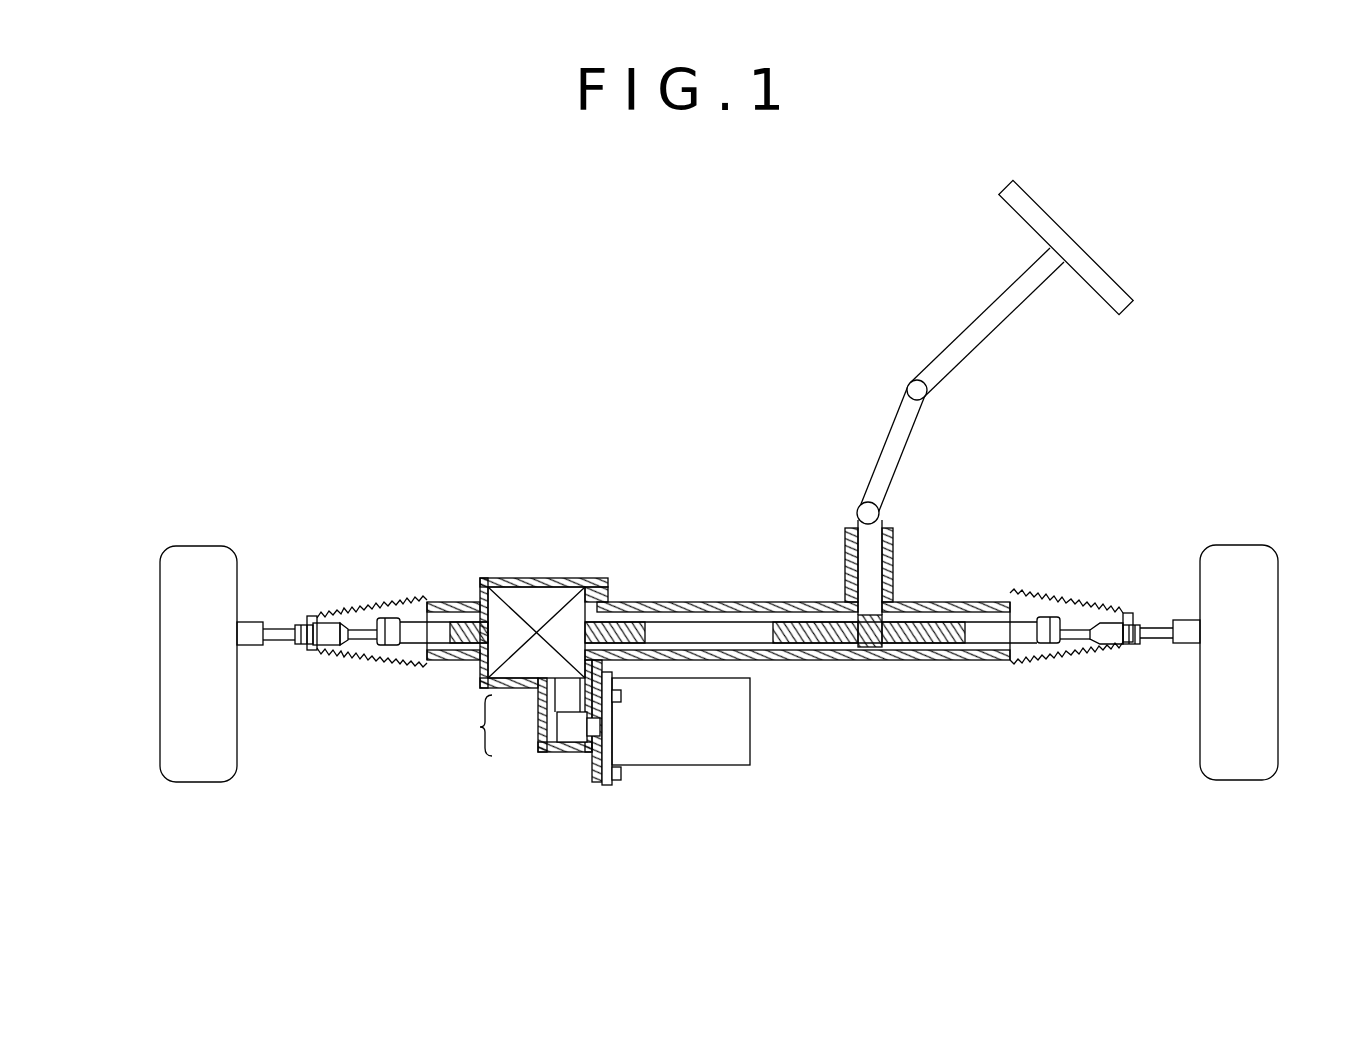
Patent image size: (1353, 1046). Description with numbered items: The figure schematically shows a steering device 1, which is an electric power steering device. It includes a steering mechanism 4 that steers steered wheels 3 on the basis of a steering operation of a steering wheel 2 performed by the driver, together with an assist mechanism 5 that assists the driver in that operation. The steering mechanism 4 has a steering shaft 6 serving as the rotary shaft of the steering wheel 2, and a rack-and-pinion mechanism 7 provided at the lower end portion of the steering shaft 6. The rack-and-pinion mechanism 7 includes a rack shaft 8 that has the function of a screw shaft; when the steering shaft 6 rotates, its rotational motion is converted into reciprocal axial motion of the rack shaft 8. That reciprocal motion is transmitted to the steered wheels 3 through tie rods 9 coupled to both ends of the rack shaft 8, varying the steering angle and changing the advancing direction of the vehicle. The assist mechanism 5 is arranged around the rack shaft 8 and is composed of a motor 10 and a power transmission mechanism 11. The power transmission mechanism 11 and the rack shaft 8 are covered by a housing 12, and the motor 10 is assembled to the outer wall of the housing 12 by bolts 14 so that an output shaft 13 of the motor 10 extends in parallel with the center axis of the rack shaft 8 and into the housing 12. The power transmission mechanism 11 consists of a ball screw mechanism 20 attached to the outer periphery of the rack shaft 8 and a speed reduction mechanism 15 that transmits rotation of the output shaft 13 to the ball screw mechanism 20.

The steering device 1 is at (486, 312).
The steering wheel 2 is at (1093, 262).
The steered wheels 3 is at (199, 555).
The steering mechanism 4 is at (731, 491).
The assist mechanism 5 is at (471, 543).
The steering shaft 6 is at (888, 425).
The rack-and-pinion mechanism 7 is at (875, 612).
The rack shaft 8 is at (765, 645).
The tie rods 9 is at (362, 650).
The motor 10 is at (672, 760).
The power transmission mechanism 11 is at (468, 725).
The housing 12 is at (556, 578).
The output shaft 13 is at (598, 725).
The bolts 14 is at (621, 697).
The speed reduction mechanism 15 is at (560, 727).
The ball screw mechanism 20 is at (512, 670).